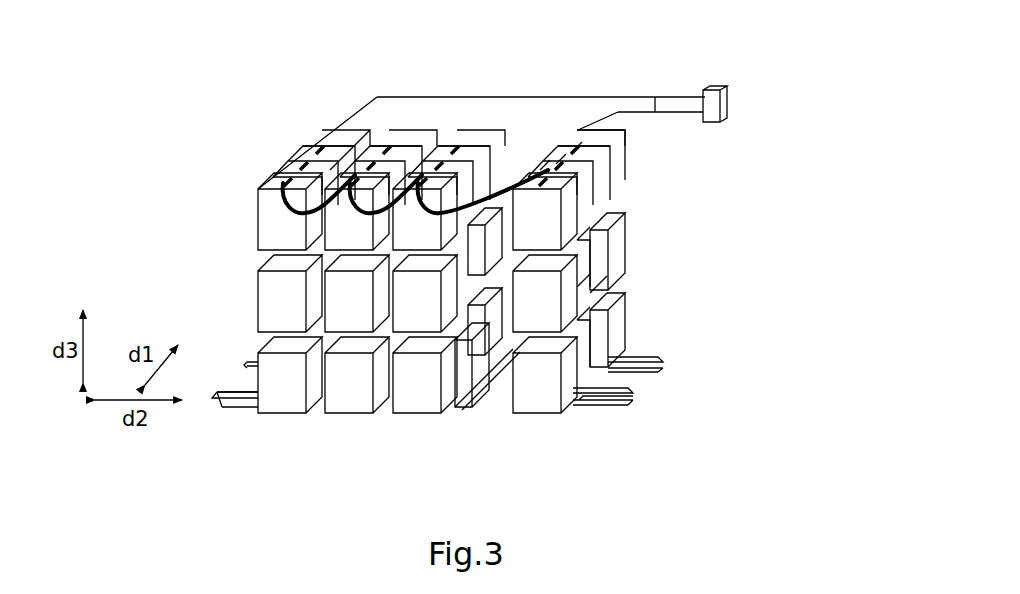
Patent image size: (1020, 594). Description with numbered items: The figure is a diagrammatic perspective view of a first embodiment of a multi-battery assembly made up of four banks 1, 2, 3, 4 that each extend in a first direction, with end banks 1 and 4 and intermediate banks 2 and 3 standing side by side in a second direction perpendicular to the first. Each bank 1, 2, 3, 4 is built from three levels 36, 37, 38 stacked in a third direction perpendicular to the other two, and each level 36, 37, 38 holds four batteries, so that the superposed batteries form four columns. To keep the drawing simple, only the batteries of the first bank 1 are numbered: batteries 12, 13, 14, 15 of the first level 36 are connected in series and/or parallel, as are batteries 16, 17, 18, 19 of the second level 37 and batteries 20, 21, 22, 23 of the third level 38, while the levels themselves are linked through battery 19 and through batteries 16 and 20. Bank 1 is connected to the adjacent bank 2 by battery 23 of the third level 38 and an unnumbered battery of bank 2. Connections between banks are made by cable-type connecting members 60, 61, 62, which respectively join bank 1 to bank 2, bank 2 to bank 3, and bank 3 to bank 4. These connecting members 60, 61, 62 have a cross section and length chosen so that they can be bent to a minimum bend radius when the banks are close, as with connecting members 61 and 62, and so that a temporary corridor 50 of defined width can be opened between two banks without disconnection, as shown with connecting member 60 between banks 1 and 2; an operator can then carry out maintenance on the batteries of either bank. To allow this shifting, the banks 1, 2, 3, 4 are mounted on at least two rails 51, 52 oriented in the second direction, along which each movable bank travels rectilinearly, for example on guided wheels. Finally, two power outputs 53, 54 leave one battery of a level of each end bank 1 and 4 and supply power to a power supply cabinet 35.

The first bank 1 is at (562, 341).
The second bank 2 is at (412, 436).
The third bank 3 is at (348, 436).
The fourth bank 4 is at (266, 436).
The battery 12 is at (590, 402).
The battery 13 is at (608, 398).
The battery 14 is at (645, 364).
The battery 15 is at (612, 350).
The battery 16 is at (620, 225).
The battery 17 is at (612, 252).
The battery 18 is at (605, 285).
The battery 19 is at (542, 305).
The battery 20 is at (610, 130).
The battery 21 is at (572, 152).
The battery 22 is at (556, 164).
The battery 23 is at (540, 170).
The power supply cabinet 35 is at (728, 104).
The first level 36 is at (658, 318).
The second level 37 is at (658, 240).
The third level 38 is at (658, 153).
The temporary corridor 50 is at (472, 424).
The rail 51 is at (232, 412).
The rail 52 is at (248, 365).
The power output 53 is at (656, 110).
The power output 54 is at (370, 110).
The connecting member 60 is at (447, 160).
The connecting member 61 is at (380, 160).
The connecting member 62 is at (282, 200).